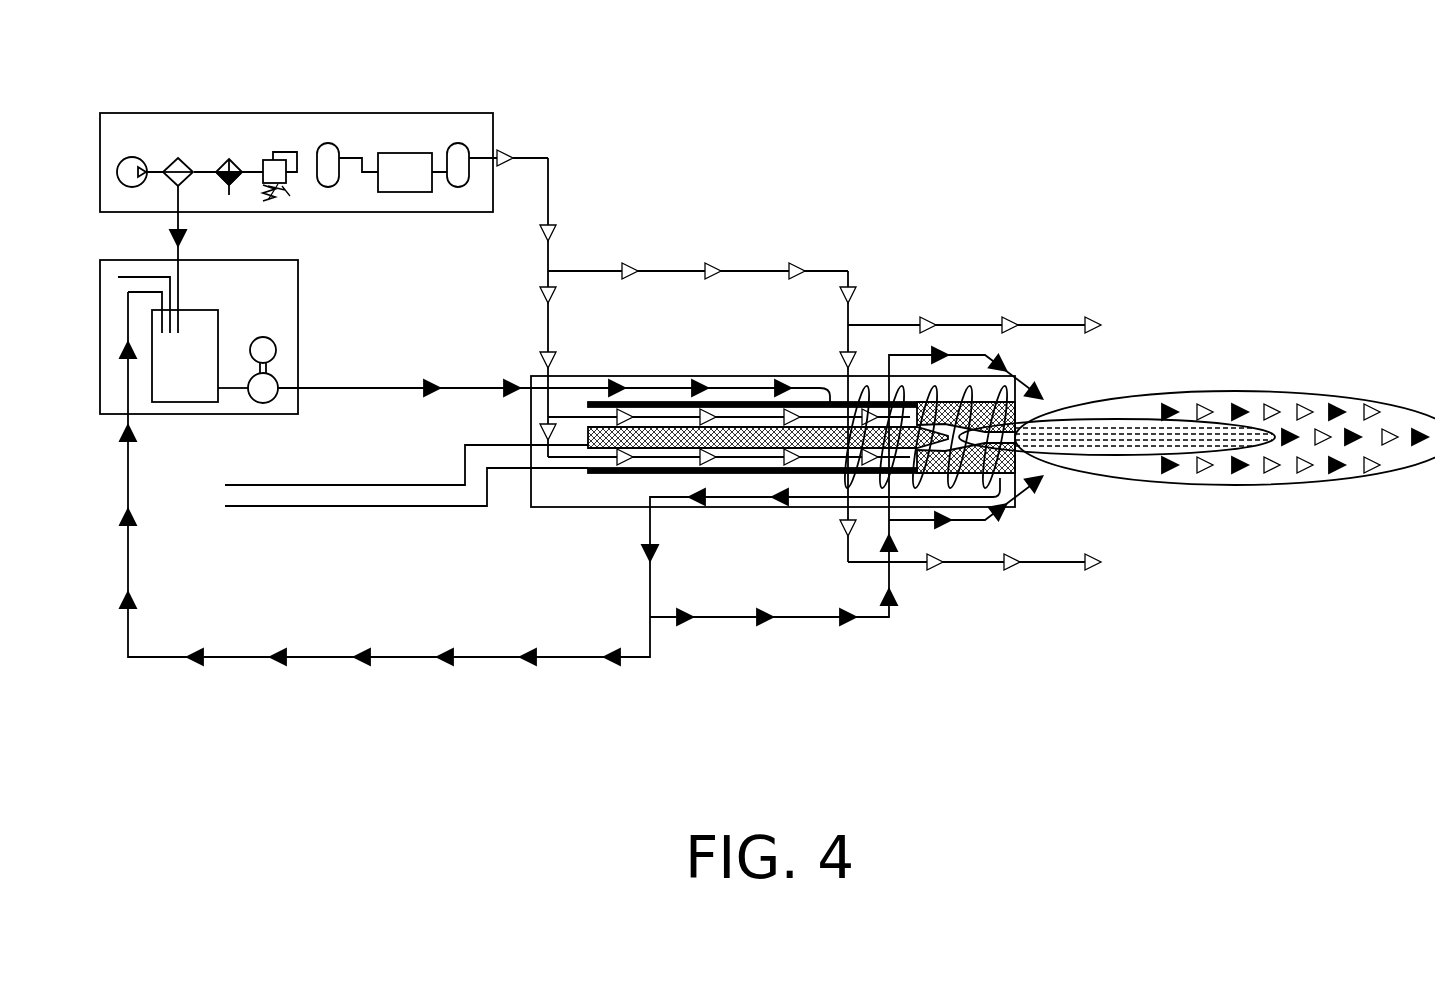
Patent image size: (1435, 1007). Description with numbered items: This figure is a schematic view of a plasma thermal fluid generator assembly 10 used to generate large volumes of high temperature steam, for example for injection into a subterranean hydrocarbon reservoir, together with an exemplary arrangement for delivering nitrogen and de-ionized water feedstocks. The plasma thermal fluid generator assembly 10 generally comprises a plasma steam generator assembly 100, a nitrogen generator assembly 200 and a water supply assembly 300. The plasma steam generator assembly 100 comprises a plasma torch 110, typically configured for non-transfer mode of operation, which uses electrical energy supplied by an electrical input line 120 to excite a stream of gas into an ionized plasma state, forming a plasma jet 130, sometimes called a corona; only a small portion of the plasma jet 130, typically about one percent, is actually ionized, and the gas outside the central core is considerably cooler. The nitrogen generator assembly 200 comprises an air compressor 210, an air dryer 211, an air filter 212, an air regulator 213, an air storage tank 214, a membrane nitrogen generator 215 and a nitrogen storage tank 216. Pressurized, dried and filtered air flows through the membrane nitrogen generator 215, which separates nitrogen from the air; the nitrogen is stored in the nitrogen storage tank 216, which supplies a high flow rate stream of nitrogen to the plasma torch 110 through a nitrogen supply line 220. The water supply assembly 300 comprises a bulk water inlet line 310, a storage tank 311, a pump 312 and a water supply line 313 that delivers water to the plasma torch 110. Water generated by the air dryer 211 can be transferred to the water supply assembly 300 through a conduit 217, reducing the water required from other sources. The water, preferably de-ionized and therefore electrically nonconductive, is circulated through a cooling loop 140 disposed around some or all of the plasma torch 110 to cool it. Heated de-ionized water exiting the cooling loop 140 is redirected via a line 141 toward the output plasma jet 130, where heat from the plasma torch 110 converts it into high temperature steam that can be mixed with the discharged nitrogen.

The plasma thermal fluid generator assembly 10 is at (920, 208).
The plasma steam generator assembly 100 is at (831, 444).
The plasma torch 110 is at (562, 507).
The electrical input line 120 is at (388, 507).
The plasma jet 130 is at (1157, 437).
The cooling loop 140 is at (998, 375).
The line 141 is at (867, 617).
The nitrogen generator assembly 200 is at (440, 112).
The air compressor 210 is at (137, 157).
The air dryer 211 is at (187, 180).
The air filter 212 is at (229, 157).
The air regulator 213 is at (272, 193).
The air storage tank 214 is at (330, 145).
The membrane nitrogen generator 215 is at (403, 193).
The nitrogen storage tank 216 is at (460, 145).
The conduit 217 is at (170, 227).
The nitrogen supply line 220 is at (550, 202).
The water supply assembly 300 is at (298, 307).
The bulk water inlet line 310 is at (258, 415).
The storage tank 311 is at (202, 310).
The pump 312 is at (273, 340).
The water supply line 313 is at (468, 396).